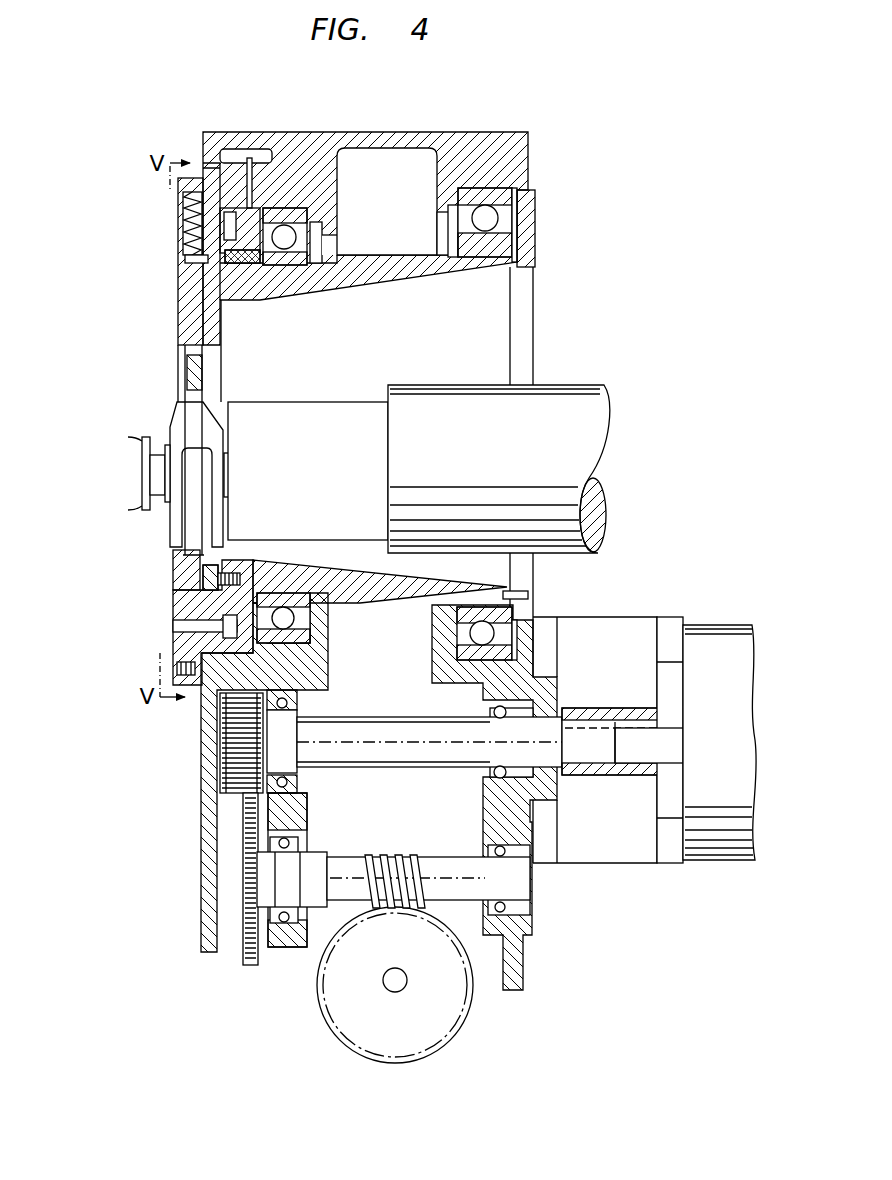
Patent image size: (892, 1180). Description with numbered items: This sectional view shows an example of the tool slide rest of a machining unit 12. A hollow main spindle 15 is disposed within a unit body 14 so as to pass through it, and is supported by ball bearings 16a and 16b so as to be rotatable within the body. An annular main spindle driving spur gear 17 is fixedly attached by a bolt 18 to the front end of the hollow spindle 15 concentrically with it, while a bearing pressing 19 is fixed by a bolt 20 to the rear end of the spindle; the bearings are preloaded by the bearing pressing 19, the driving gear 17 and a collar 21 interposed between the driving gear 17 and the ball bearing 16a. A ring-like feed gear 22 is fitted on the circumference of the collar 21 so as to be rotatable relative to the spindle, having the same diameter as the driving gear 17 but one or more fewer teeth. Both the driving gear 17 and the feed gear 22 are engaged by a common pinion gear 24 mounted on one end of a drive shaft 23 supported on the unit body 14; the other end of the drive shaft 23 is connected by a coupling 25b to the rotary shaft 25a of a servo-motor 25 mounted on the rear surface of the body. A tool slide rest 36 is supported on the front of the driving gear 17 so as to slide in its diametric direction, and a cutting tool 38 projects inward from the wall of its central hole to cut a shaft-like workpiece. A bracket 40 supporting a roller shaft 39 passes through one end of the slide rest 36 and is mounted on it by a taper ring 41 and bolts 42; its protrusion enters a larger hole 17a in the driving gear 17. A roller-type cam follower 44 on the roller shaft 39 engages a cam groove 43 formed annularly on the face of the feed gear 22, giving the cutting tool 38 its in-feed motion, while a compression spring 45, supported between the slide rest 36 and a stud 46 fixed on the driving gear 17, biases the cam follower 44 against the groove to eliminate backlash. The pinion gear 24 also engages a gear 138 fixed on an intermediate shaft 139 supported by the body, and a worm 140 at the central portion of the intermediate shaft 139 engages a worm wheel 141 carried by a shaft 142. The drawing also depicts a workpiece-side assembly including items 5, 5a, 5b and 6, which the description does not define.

The tool spindle 5 is at (140, 478).
The pin 5a is at (232, 472).
The tool holder plate 5b is at (188, 430).
The main shaft 6 is at (355, 410).
The machining unit 12 is at (537, 143).
The unit body 14 is at (453, 133).
The hollow main spindle 15 is at (383, 275).
The ball bearing 16a is at (296, 238).
The ball bearing 16b is at (500, 217).
The main spindle driving spur gear 17 is at (207, 175).
The hole 17a is at (212, 667).
The bolt 18 is at (195, 583).
The bearing pressing 19 is at (535, 257).
The bolt 20 is at (527, 595).
The collar 21 is at (250, 263).
The feed gear 22 is at (250, 150).
The drive shaft 23 is at (410, 718).
The pinion gear 24 is at (223, 750).
The servo-motor 25 is at (707, 860).
The rotary shaft 25a is at (662, 742).
The coupling 25b is at (602, 770).
The tool slide rest 36 is at (188, 290).
The cutting tool 38 is at (188, 380).
The roller shaft 39 is at (180, 627).
The bracket 40 is at (180, 613).
The taper ring 41 is at (177, 593).
The bolts 42 is at (177, 670).
The cam groove 43 is at (230, 237).
The cam follower 44 is at (245, 590).
The compression spring 45 is at (183, 207).
The stud 46 is at (193, 260).
The gear 138 is at (252, 965).
The intermediate shaft 139 is at (443, 862).
The worm 140 is at (393, 858).
The worm wheel 141 is at (447, 1047).
The shaft 142 is at (393, 990).